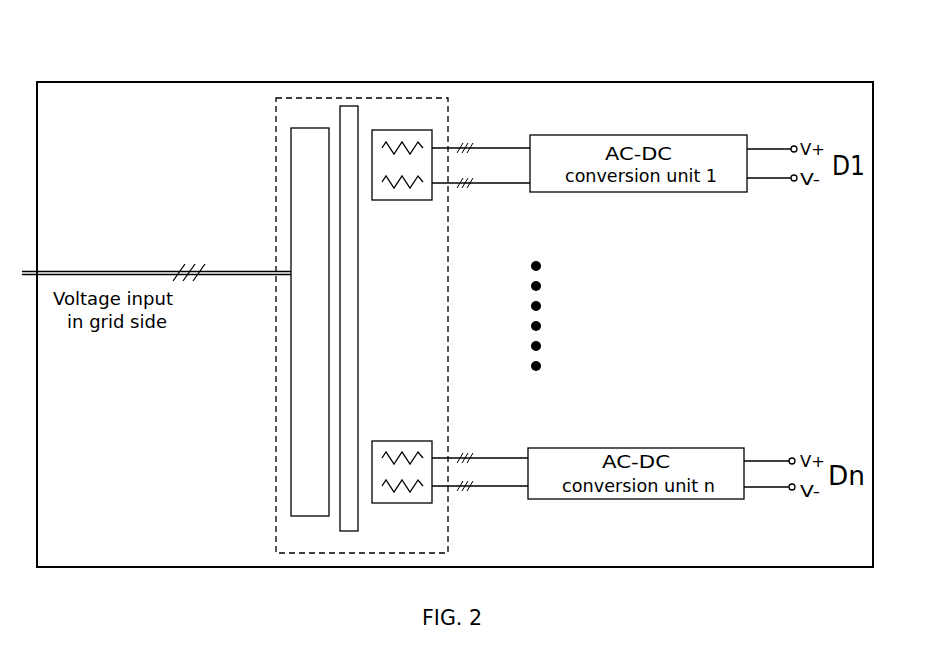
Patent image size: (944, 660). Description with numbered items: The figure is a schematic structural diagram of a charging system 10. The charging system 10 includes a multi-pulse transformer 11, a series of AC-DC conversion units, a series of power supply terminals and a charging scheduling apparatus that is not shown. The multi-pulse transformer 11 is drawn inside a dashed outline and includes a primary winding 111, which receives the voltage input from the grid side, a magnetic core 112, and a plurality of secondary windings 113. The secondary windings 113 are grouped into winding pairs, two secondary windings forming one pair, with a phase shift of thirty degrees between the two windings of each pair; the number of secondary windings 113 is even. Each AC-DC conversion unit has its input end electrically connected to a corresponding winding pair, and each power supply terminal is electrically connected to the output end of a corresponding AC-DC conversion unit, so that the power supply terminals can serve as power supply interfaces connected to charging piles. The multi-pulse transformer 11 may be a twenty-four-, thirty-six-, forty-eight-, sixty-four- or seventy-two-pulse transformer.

The charging system 10 is at (245, 92).
The multi-pulse transformer 11 is at (367, 100).
The primary winding 111 is at (307, 426).
The magnetic core 112 is at (340, 530).
The secondary windings 113 is at (420, 147).